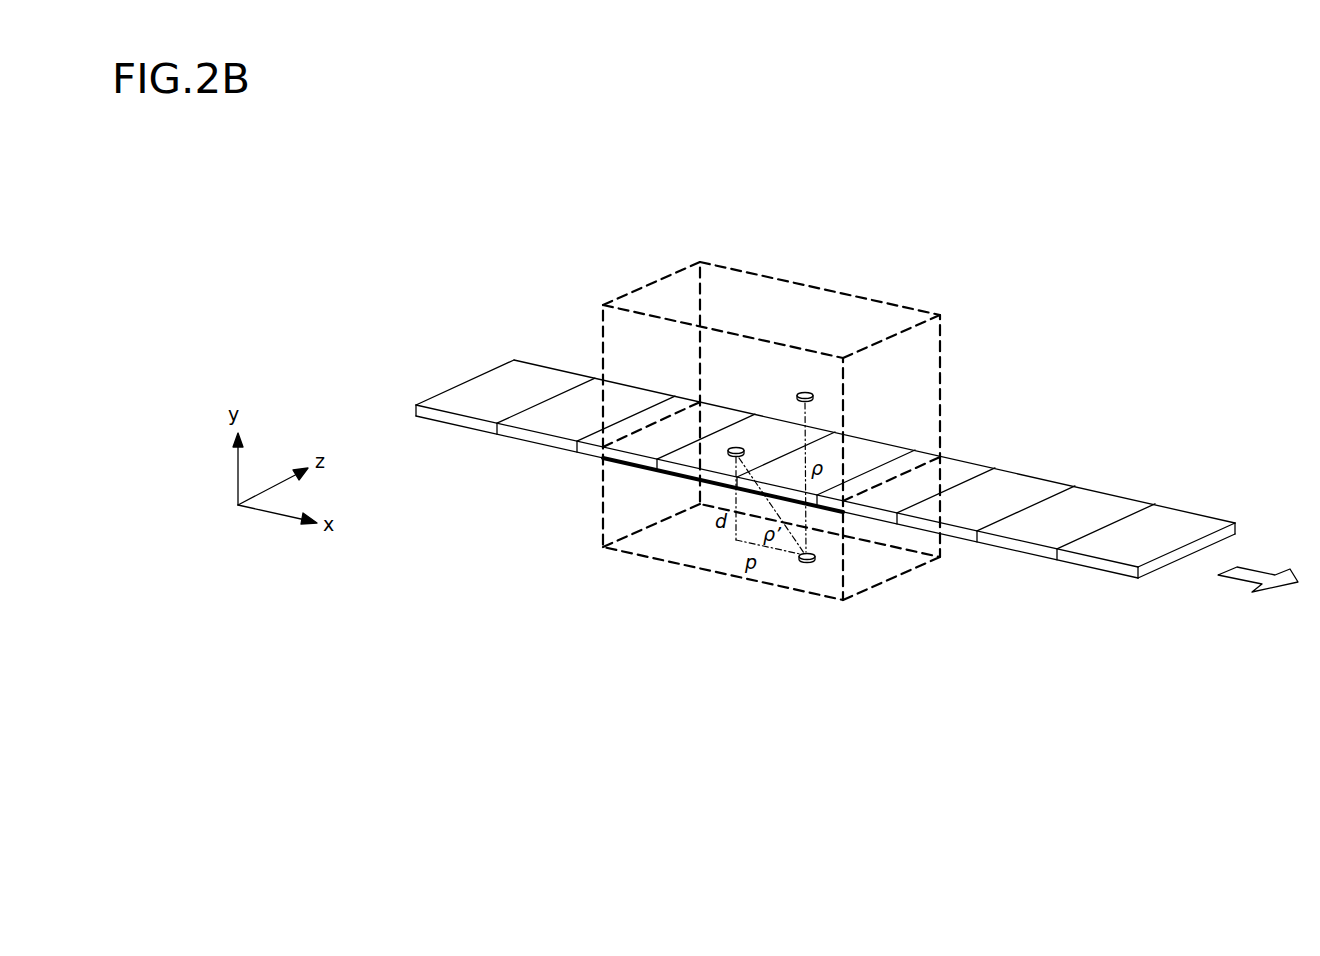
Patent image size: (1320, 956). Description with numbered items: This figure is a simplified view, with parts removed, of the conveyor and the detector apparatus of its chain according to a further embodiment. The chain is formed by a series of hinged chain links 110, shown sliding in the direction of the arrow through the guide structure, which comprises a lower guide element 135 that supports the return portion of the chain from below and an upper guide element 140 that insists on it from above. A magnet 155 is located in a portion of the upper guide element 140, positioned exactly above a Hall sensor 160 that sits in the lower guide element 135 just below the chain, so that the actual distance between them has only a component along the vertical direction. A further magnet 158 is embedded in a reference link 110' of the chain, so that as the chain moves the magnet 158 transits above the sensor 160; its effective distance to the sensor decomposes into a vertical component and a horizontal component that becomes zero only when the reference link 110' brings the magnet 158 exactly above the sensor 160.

The chain link 110 is at (825, 469).
The reference link 110' is at (754, 351).
The upper guide element 140 is at (885, 318).
The lower guide element 135 is at (653, 552).
The magnet 155 is at (813, 400).
The further magnet 158 is at (736, 446).
The Hall sensor 160 is at (807, 565).